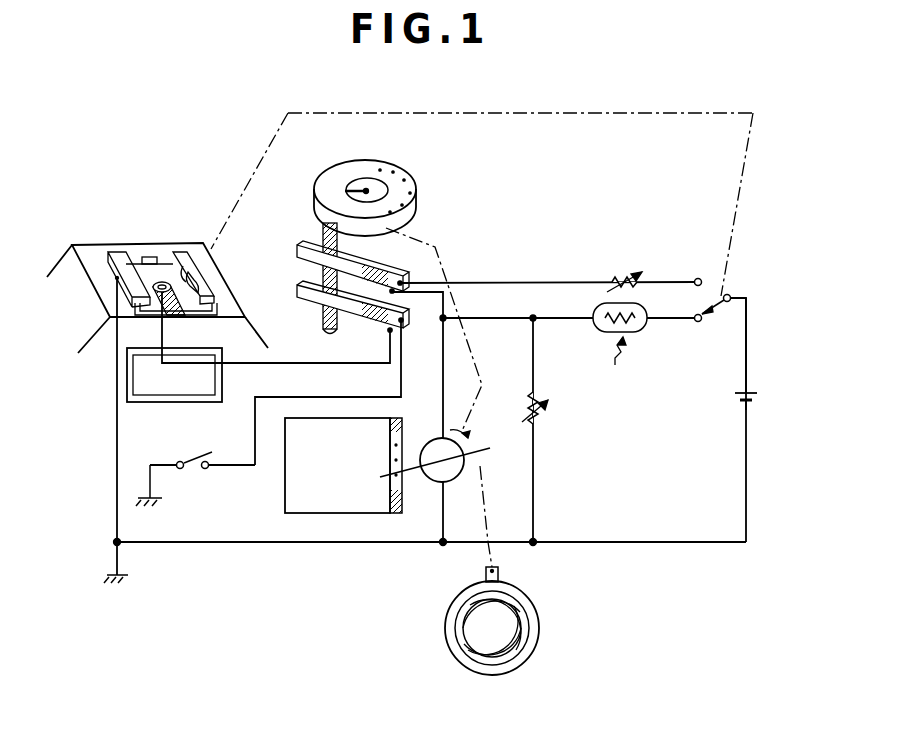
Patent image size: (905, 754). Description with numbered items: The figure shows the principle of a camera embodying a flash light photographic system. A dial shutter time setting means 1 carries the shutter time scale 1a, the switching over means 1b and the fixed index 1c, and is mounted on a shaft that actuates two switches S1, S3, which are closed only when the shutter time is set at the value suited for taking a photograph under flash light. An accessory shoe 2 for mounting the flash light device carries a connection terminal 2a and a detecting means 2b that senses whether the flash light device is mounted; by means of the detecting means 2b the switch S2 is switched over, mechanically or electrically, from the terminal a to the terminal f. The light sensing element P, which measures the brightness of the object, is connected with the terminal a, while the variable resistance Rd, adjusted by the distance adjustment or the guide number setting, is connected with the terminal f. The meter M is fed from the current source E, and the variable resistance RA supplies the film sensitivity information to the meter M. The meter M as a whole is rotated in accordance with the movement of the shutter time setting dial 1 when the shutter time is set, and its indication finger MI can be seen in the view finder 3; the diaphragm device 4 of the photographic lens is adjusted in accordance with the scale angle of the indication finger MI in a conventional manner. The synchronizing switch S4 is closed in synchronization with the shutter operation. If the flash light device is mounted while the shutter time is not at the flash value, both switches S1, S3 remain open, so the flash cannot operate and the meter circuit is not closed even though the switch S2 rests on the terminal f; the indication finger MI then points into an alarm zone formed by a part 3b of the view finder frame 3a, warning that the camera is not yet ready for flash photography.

The dial shutter time setting means 1 is at (375, 176).
The shutter time scale 1a is at (322, 188).
The switching over means 1b is at (324, 228).
The fixed index 1c is at (366, 191).
The accessory shoe 2 is at (159, 270).
The connection terminal 2a is at (163, 284).
The detecting means 2b is at (200, 284).
The view finder 3 is at (348, 469).
The view finder frame 3a is at (402, 440).
The part of the view finder frame 3b is at (400, 513).
The diaphragm device 4 is at (537, 622).
The switch S1 is at (297, 251).
The switch S2 is at (722, 318).
The switch S3 is at (297, 291).
The synchronizing switch S4 is at (202, 449).
The variable resistance Rd is at (623, 270).
The variable resistance RA is at (547, 416).
The light sensing element P is at (600, 305).
The current source E is at (738, 357).
The meter M is at (448, 479).
The indication finger MI is at (425, 500).
The terminal f is at (695, 268).
The terminal a is at (697, 334).